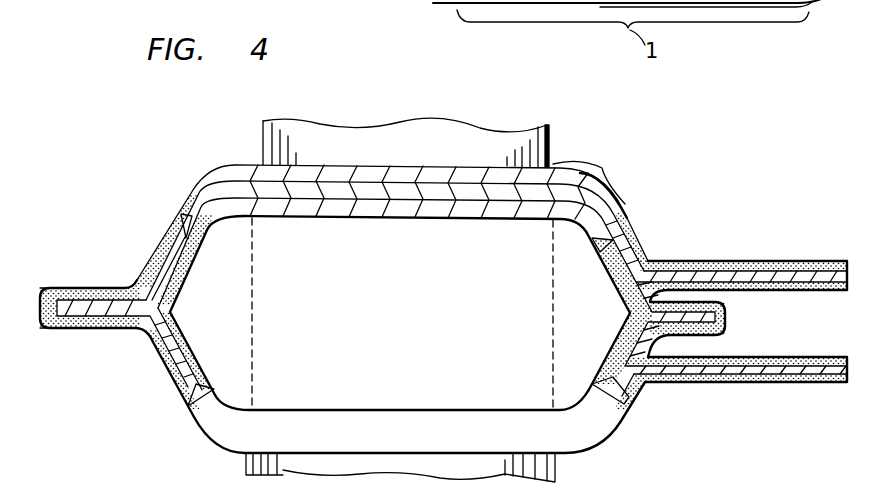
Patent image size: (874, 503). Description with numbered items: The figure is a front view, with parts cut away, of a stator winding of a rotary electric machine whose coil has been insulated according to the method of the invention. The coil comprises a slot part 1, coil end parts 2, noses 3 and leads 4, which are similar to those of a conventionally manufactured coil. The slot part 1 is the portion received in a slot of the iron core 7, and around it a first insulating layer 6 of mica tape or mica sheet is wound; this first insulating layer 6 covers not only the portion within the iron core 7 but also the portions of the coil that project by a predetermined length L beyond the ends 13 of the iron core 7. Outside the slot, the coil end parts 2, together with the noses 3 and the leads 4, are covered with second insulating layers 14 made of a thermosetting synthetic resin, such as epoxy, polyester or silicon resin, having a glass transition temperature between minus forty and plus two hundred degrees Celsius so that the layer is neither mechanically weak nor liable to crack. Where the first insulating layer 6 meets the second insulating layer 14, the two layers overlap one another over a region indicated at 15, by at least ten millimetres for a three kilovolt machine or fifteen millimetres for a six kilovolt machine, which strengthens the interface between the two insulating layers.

The slot part 1 is at (343, 190).
The coil end part 2 is at (163, 256).
The nose 3 is at (72, 324).
The lead 4 is at (782, 272).
The first insulating layer 6 is at (452, 168).
The iron core 7 is at (535, 150).
The end of the iron core 13 is at (552, 143).
The second insulating layer 14 is at (121, 328).
The overlap of first and second insulating layers 15 is at (633, 404).
The predetermined length L is at (589, 173).